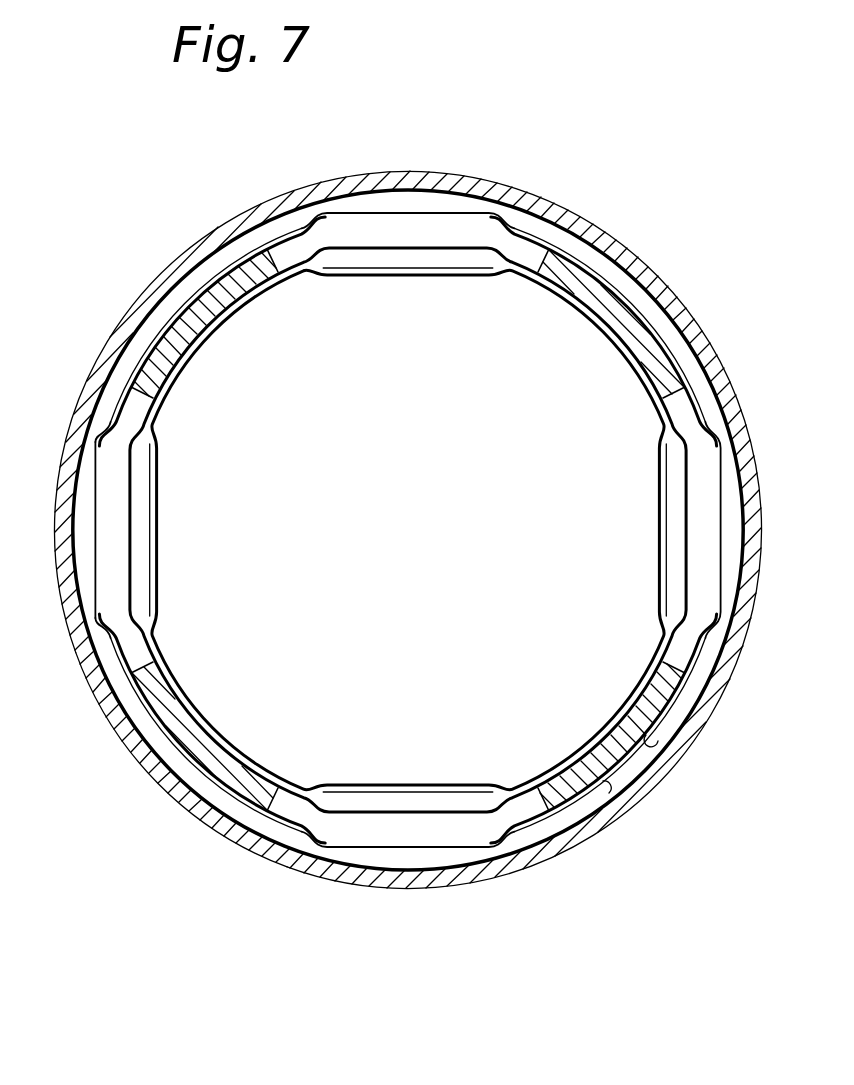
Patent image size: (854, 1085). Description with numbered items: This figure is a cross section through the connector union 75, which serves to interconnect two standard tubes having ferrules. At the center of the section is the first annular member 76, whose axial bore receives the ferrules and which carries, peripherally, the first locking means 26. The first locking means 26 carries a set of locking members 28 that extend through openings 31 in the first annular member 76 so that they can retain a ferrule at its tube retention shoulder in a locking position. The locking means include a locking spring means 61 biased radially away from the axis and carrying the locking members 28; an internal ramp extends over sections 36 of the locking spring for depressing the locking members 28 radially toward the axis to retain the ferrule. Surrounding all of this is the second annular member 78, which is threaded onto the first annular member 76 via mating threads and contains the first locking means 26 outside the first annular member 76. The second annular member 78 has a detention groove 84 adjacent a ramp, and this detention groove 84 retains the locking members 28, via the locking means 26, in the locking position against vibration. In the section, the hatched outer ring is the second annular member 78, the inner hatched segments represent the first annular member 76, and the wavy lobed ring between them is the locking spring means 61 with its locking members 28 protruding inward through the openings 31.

The first locking means 26 is at (103, 452).
The locking members 28 is at (460, 270).
The openings 31 is at (455, 235).
The sections of the locking spring 36 is at (243, 245).
The locking spring means 61 is at (695, 680).
The connector union 75 is at (126, 307).
The first annular member 76 is at (232, 300).
The second annular member 78 is at (136, 769).
The detention groove 84 is at (90, 596).